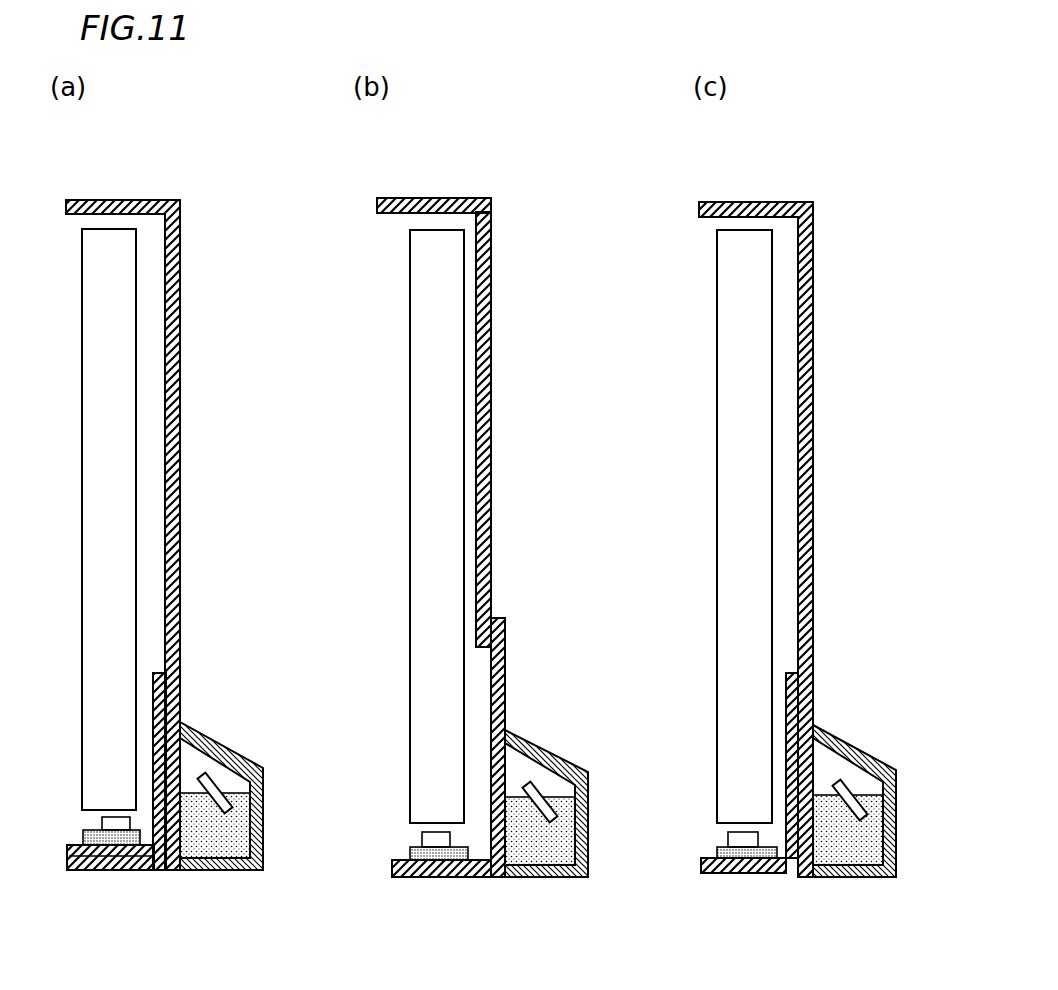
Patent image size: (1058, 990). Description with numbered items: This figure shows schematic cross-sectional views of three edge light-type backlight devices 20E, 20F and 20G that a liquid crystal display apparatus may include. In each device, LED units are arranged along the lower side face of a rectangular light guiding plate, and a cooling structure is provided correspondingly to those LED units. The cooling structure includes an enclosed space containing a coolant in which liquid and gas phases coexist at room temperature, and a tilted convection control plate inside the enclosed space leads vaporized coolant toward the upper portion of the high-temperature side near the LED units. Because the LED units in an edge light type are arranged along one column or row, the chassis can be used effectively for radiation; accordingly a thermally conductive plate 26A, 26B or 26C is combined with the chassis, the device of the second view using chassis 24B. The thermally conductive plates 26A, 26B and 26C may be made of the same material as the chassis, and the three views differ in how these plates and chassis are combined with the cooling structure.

The backlight device 20E is at (188, 175).
The backlight device 20F is at (507, 175).
The backlight device 20G is at (823, 175).
The chassis 24B is at (492, 878).
The thermally conductive plate 26A is at (67, 848).
The thermally conductive plate 26B is at (492, 522).
The thermally conductive plate 26C is at (790, 673).